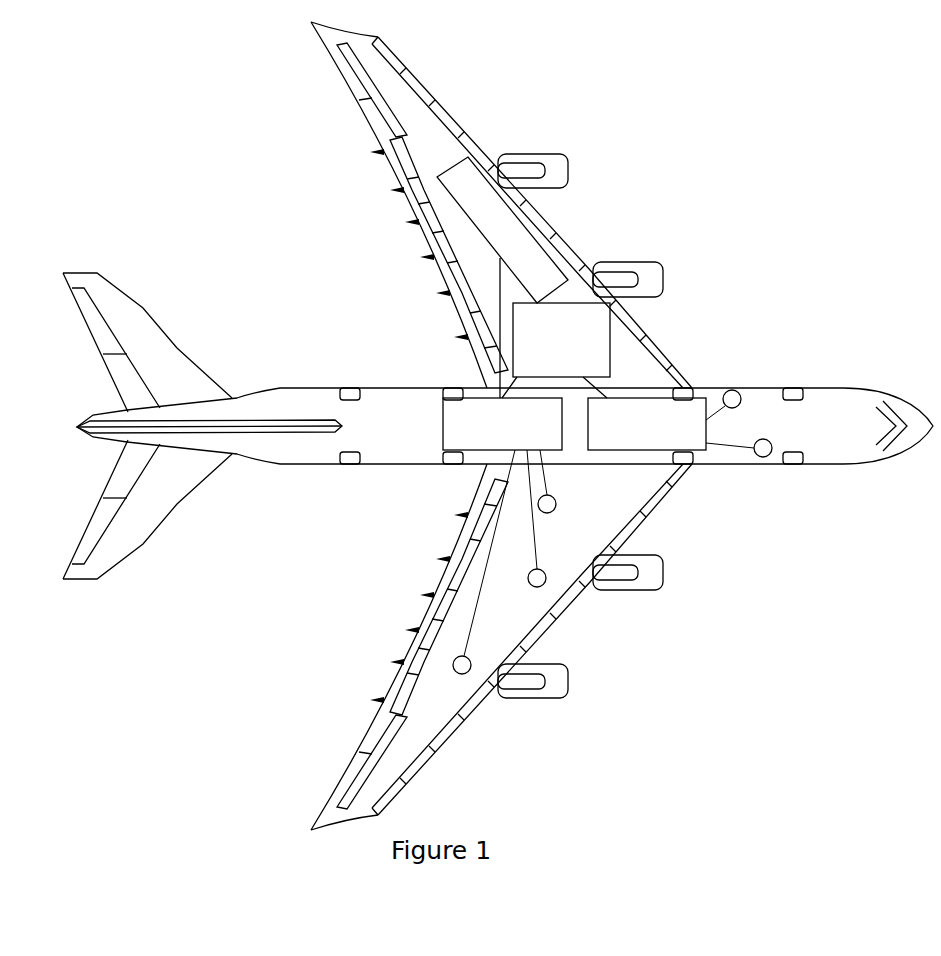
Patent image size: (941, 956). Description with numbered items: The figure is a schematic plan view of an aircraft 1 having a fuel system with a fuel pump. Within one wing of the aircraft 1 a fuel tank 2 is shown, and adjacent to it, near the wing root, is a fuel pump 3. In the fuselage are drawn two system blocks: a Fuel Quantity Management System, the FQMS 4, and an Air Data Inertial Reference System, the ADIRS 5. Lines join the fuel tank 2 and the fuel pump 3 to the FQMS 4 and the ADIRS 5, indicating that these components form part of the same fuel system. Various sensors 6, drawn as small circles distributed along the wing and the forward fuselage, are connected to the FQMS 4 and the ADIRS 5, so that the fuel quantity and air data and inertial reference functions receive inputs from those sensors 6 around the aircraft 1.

The aircraft 1 is at (690, 216).
The fuel tank 2 is at (467, 172).
The fuel pump 3 is at (606, 352).
The Fuel Quantity Management System (FQMS) 4 is at (450, 438).
The Air Data Inertial Reference System (ADIRS) 5 is at (693, 443).
The sensors 6 is at (733, 390).